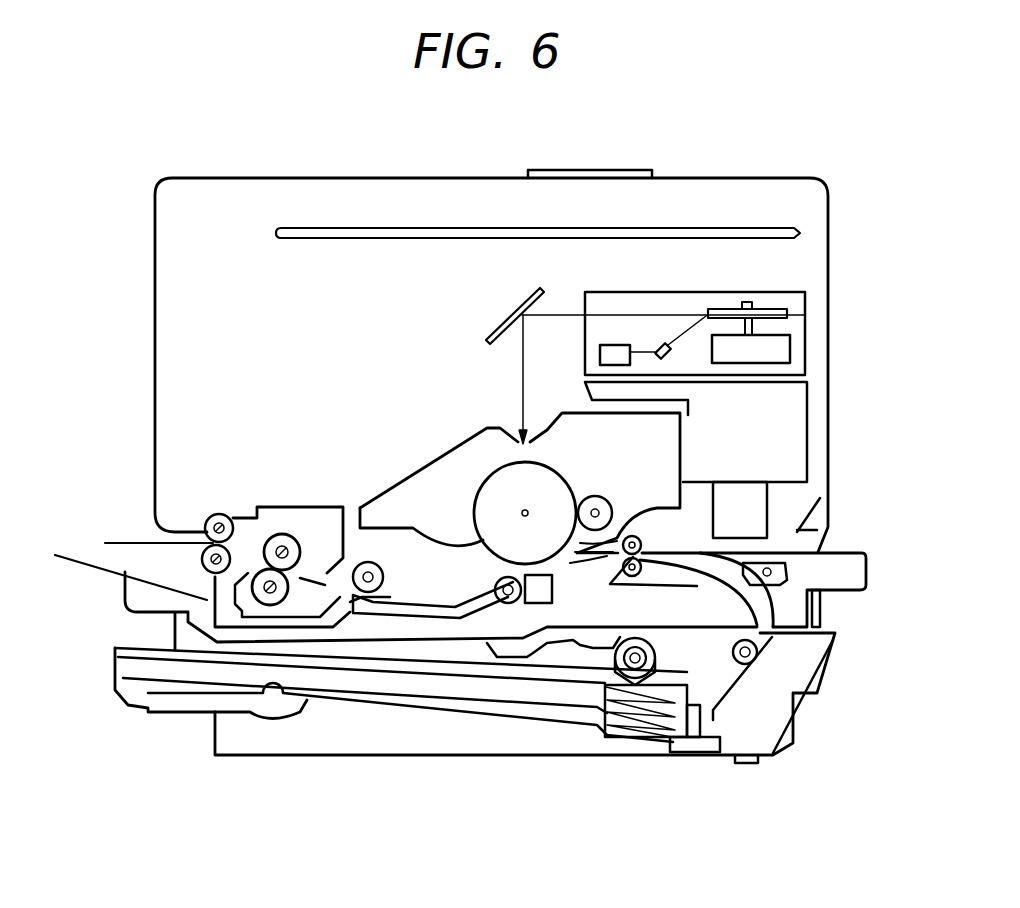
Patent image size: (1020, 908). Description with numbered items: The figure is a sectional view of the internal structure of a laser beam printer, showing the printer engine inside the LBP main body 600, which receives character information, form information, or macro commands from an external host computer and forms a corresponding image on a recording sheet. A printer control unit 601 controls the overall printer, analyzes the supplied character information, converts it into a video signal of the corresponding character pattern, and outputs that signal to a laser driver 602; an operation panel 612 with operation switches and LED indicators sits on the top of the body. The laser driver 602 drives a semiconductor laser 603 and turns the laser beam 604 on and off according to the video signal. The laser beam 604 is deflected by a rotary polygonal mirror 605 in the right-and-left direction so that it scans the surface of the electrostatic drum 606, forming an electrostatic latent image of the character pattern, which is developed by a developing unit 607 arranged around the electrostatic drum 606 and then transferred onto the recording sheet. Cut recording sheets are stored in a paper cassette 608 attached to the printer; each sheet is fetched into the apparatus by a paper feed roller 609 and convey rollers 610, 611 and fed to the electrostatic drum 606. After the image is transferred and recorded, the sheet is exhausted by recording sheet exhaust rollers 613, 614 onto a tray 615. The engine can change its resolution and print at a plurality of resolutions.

The LBP main body 600 is at (776, 178).
The printer control unit 601 is at (803, 230).
The laser driver 602 is at (600, 355).
The semiconductor laser 603 is at (667, 357).
The laser beam 604 is at (692, 313).
The rotary polygonal mirror 605 is at (790, 313).
The electrostatic drum 606 is at (493, 478).
The developing unit 607 is at (398, 493).
The paper cassette 608 is at (112, 668).
The paper feed roller 609 is at (630, 665).
The convey roller 610 is at (745, 665).
The convey roller 611 is at (634, 576).
The operation panel 612 is at (638, 170).
The recording sheet exhaust roller 613 is at (258, 572).
The recording sheet exhaust roller 614 is at (206, 545).
The tray 615 is at (80, 558).